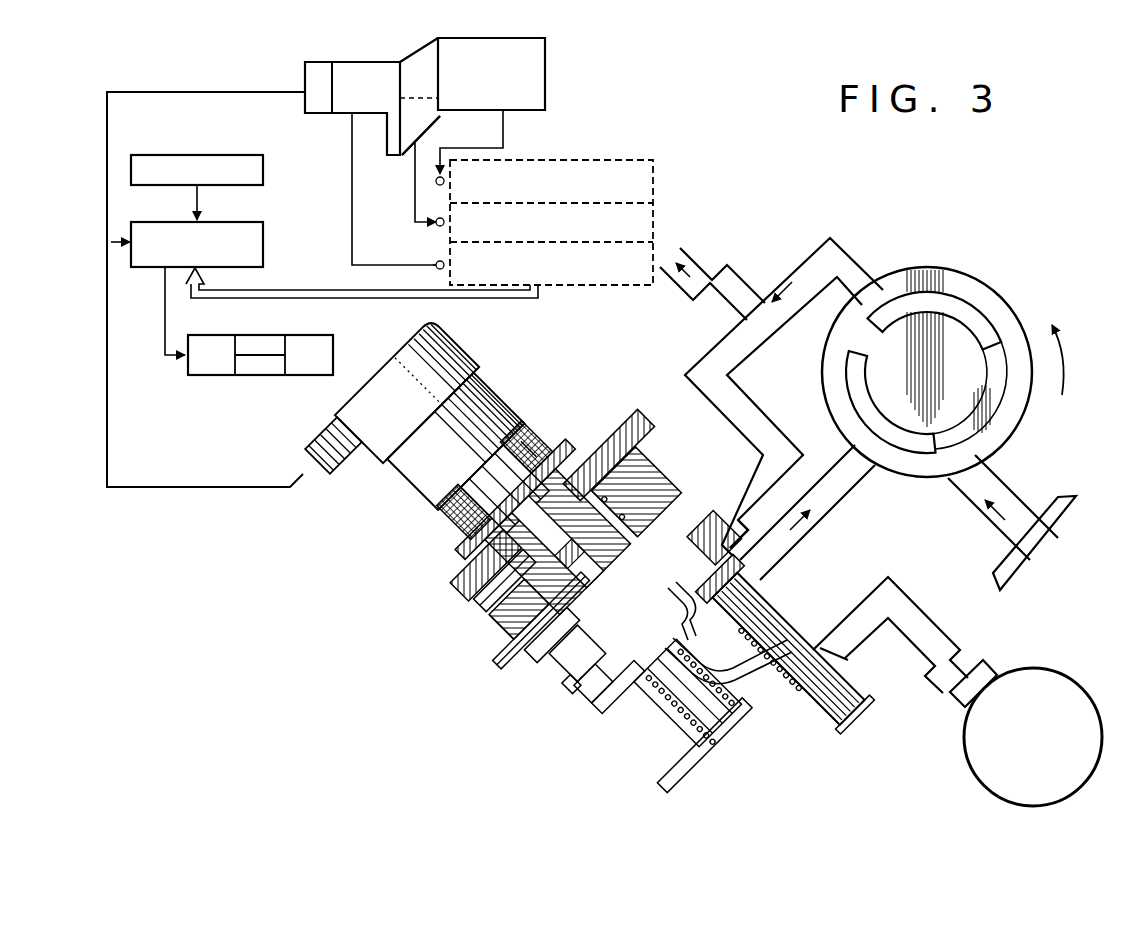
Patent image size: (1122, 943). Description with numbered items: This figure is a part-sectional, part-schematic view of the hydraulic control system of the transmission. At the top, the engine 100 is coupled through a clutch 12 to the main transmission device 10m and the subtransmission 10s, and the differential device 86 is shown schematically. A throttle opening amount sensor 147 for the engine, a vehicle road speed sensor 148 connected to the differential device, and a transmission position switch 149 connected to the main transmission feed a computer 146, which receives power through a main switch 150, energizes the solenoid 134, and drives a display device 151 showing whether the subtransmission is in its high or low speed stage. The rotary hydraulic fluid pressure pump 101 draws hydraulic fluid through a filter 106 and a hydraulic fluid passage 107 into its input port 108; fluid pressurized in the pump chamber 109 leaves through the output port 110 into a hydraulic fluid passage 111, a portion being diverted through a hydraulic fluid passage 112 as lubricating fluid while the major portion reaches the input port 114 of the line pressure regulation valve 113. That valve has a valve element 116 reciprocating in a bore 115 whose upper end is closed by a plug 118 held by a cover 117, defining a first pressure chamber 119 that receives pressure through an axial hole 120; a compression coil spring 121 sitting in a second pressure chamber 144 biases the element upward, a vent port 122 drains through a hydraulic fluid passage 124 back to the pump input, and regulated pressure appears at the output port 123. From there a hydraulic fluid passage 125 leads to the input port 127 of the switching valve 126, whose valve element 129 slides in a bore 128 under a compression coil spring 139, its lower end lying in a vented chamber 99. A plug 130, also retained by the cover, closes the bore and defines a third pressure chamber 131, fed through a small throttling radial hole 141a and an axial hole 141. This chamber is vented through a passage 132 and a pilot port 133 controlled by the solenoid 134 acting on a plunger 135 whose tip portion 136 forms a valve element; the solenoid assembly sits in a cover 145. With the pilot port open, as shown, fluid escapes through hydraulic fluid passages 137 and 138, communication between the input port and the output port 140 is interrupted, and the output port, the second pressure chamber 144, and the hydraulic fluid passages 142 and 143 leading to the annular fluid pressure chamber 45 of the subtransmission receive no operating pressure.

The subtransmission 10s is at (316, 68).
The main transmission device 10m is at (373, 68).
The clutch 12 is at (420, 60).
The internal combustion engine 100 is at (545, 72).
The differential device 86 is at (430, 134).
The main switch 150 is at (263, 165).
The computer 146 is at (263, 243).
The display device 151 is at (294, 334).
The throttle opening amount sensor 147 is at (653, 170).
The vehicle road speed sensor 148 is at (653, 215).
The transmission position switch 149 is at (606, 285).
The cover 145 is at (498, 403).
The solenoid 134 is at (538, 433).
The plunger 135 is at (522, 446).
The tip portion 136 is at (515, 481).
The pilot port 133 is at (565, 468).
The cover 117 is at (625, 432).
The plug 130 is at (500, 565).
The hydraulic fluid passage 137 is at (522, 585).
The hydraulic fluid passage 138 is at (500, 640).
The bore 115 is at (612, 560).
The axial hole 120 is at (596, 542).
The third pressure chamber 131 is at (618, 598).
The hydraulic fluid passage 125 is at (670, 600).
The plug 118 is at (660, 485).
The first pressure chamber 119 is at (668, 510).
The line pressure regulation valve 113 is at (700, 530).
The input port 114 is at (735, 550).
The passage 132 is at (572, 605).
The switching valve 126 is at (598, 635).
The bore 128 is at (598, 632).
The axial hole 141 is at (640, 645).
The input port 127 is at (640, 690).
The radial hole 141a is at (658, 692).
The valve element 129 is at (658, 700).
The output port 140 is at (740, 705).
The chamber 99 is at (760, 742).
The compression coil spring 139 is at (708, 742).
The output port 123 is at (712, 612).
The vent port 122 is at (748, 576).
The compression coil spring 121 is at (770, 616).
The valve element 116 is at (758, 598).
The second pressure chamber 144 is at (824, 635).
The hydraulic fluid passage 142 is at (842, 653).
The hydraulic fluid passage 143 is at (972, 666).
The annular fluid pressure chamber 45 is at (1086, 705).
The rotary hydraulic fluid pressure pump 101 is at (1020, 312).
The output port 110 is at (958, 308).
The input port 108 is at (860, 408).
The pump chamber 109 is at (980, 398).
The hydraulic fluid passage 111 is at (845, 262).
The hydraulic fluid passage 112 is at (700, 295).
The hydraulic fluid passage 124 is at (862, 482).
The hydraulic fluid passage 107 is at (970, 508).
The filter 106 is at (1042, 528).